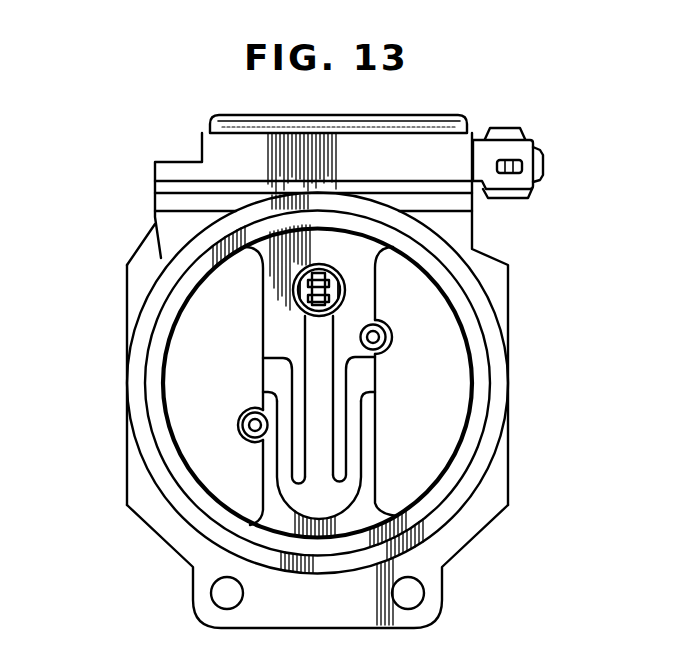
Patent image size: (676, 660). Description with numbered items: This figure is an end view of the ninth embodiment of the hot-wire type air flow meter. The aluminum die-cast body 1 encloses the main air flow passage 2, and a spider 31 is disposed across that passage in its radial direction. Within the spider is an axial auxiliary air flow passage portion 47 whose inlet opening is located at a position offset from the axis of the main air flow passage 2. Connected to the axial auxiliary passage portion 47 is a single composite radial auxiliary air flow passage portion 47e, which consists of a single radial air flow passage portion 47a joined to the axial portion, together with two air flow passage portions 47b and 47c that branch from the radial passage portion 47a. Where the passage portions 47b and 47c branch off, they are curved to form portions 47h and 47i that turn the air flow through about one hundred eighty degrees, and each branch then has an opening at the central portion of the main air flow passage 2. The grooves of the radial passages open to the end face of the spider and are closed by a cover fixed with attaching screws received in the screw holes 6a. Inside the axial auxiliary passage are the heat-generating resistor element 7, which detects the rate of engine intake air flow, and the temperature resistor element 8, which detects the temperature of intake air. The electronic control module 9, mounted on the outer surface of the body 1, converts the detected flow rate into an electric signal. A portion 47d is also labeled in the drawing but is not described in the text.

The body 1 is at (425, 600).
The main air flow passage 2 is at (453, 363).
The screw holes 6a is at (253, 403).
The heat-generating resistor element 7 is at (265, 335).
The temperature resistor element 8 is at (317, 266).
The electronic control module 9 is at (239, 150).
The spider 31 is at (264, 294).
The axial auxiliary air flow passage portion 47 is at (267, 333).
The radial air flow passage portion 47a is at (318, 412).
The air flow passage portion 47b is at (283, 440).
The air flow passage portion 47c is at (378, 378).
The right tongue 47d is at (354, 467).
The composite radial auxiliary air flow passage portion 47e is at (270, 370).
The curved portion 47h is at (295, 483).
The curved portion 47i is at (338, 494).